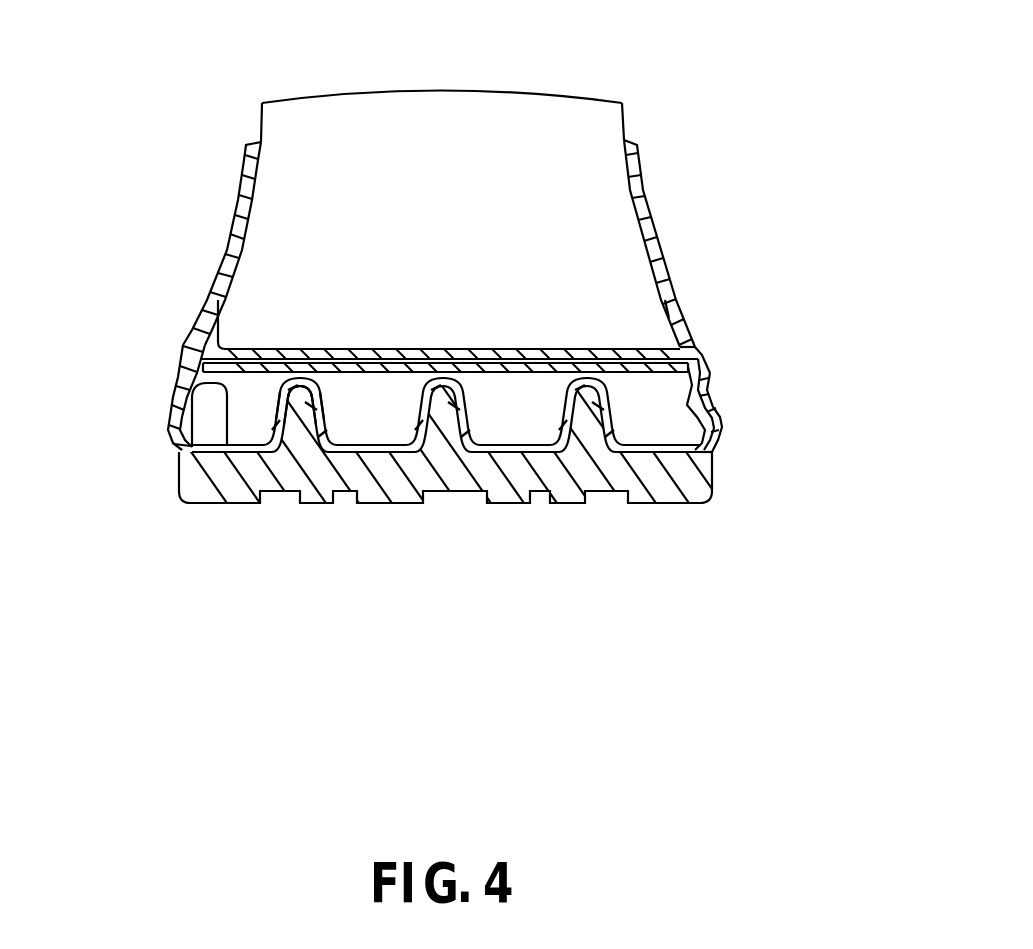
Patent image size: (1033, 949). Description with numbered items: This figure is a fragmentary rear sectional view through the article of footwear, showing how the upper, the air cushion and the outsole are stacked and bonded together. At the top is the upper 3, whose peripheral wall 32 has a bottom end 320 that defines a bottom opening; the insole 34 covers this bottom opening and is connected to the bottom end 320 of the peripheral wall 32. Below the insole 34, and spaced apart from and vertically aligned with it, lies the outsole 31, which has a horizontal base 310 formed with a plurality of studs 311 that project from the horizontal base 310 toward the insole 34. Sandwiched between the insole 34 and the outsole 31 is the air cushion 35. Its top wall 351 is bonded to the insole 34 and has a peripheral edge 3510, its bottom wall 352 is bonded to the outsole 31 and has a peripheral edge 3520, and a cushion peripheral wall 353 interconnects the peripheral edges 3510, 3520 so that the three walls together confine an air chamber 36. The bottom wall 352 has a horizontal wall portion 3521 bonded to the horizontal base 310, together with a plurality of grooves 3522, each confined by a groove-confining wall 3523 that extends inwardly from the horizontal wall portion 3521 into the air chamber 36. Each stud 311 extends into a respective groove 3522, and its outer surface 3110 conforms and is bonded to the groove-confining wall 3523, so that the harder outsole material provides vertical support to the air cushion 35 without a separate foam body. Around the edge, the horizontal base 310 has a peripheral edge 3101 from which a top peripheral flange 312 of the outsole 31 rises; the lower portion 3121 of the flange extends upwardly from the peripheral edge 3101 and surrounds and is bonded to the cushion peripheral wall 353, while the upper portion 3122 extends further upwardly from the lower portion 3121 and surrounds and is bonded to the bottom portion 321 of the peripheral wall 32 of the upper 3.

The upper 3 is at (642, 113).
The outsole 31 is at (199, 520).
The horizontal base 310 is at (392, 478).
The studs 311 is at (303, 420).
The outer surface 3110 is at (283, 400).
The peripheral edge 3101 is at (712, 452).
The peripheral wall 32 is at (662, 263).
The bottom end 320 is at (682, 335).
The bottom portion 321 is at (225, 313).
The top peripheral flange 312 is at (726, 357).
The lower portion 3121 is at (722, 418).
The upper portion 3122 is at (676, 305).
The insole 34 is at (508, 352).
The air cushion 35 is at (679, 438).
The top wall 351 is at (630, 444).
The bottom wall 352 is at (388, 445).
The grooves 3522 is at (283, 395).
The groove-confining wall 3523 is at (283, 395).
The cushion peripheral wall 353 is at (170, 428).
The peripheral edge 3510 is at (183, 358).
The peripheral edge 3520 is at (176, 450).
The horizontal wall portion 3521 is at (178, 392).
The air chamber 36 is at (538, 397).